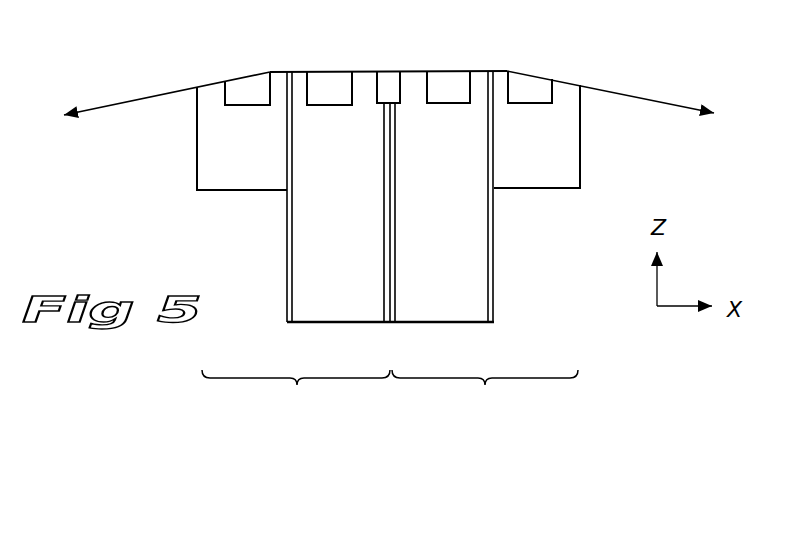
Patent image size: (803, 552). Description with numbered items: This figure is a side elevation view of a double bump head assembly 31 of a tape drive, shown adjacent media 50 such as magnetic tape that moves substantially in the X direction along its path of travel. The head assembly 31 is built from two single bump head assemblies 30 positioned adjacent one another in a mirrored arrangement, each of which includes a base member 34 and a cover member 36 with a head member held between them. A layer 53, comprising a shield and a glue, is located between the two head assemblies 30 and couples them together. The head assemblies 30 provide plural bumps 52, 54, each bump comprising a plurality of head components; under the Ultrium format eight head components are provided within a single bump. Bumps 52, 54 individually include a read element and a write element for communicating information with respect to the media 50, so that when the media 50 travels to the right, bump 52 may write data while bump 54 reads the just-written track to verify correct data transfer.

The head assembly 30 is at (390, 393).
The double bump head assembly 31 is at (160, 46).
The base member 34 is at (327, 336).
The cover member 36 is at (240, 202).
The media 50 is at (148, 97).
The bump 52 is at (292, 52).
The layer 53 is at (393, 337).
The bump 54 is at (485, 52).